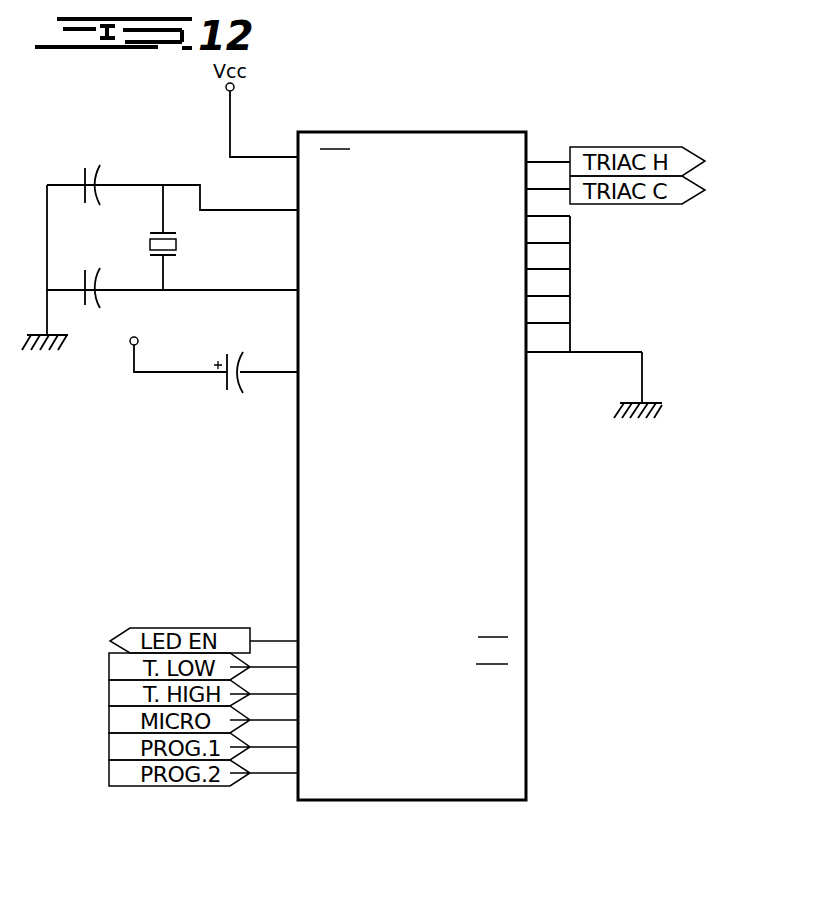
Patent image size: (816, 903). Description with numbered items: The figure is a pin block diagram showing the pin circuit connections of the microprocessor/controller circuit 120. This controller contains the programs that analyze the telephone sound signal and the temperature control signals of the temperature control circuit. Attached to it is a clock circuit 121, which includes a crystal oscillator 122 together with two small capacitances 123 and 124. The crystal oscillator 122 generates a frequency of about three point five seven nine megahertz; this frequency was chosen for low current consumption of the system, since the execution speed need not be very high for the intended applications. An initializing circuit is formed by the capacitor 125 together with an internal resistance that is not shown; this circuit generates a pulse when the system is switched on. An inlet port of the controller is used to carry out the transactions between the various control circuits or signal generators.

The microprocessor/controller circuit 120 is at (424, 178).
The clock circuit 121 is at (172, 168).
The crystal oscillator 122 is at (178, 248).
The small capacitance 123 is at (91, 163).
The small capacitance 124 is at (97, 308).
The capacitor 125 is at (232, 396).